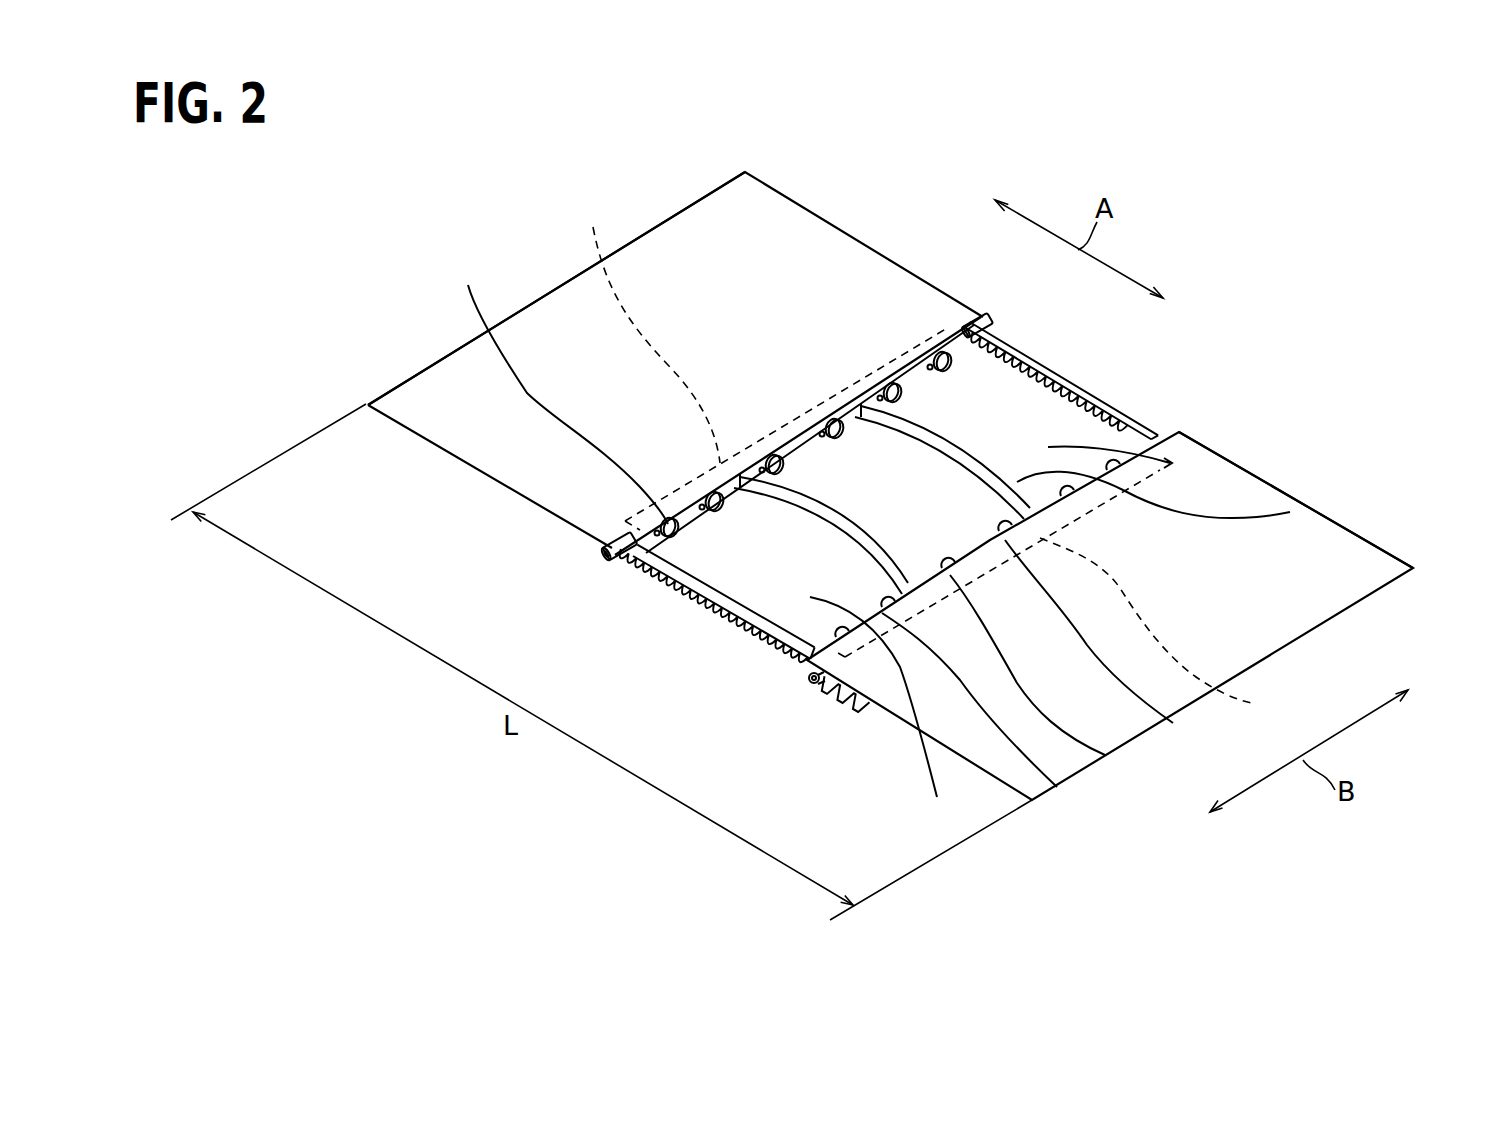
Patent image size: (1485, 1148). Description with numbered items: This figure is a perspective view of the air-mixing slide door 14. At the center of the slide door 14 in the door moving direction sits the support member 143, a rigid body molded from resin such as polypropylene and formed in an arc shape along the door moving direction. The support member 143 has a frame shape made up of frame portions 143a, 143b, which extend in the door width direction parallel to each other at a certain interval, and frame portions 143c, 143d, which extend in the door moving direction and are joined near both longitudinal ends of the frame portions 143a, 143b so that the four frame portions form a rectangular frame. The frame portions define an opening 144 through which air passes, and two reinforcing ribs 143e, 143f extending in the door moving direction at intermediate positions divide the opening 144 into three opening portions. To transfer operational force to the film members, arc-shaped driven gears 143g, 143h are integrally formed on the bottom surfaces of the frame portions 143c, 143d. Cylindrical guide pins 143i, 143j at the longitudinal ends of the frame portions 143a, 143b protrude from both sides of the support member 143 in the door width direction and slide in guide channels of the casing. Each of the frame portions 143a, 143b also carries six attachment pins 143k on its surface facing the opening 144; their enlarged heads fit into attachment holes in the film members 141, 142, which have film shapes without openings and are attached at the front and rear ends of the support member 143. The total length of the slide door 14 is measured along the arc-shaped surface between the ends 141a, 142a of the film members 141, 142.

The slide door 14 is at (870, 539).
The film member 141 is at (1245, 630).
The end of film member 141a is at (1345, 614).
The film member 142 is at (775, 228).
The end of film member 142a is at (428, 370).
The support member 143 is at (870, 518).
The frame portion 143a is at (642, 331).
The frame portion 143b is at (1182, 629).
The frame portion 143c is at (632, 562).
The frame portion 143d is at (1113, 403).
The reinforcing rib 143e is at (1105, 755).
The reinforcing rib 143f is at (1290, 512).
The driven gear 143g is at (703, 607).
The driven gear 143h is at (1040, 372).
The guide pin 143i is at (605, 552).
The guide pin 143j is at (990, 322).
The attachment pin 143k is at (710, 543).
The opening 144 is at (1057, 787).